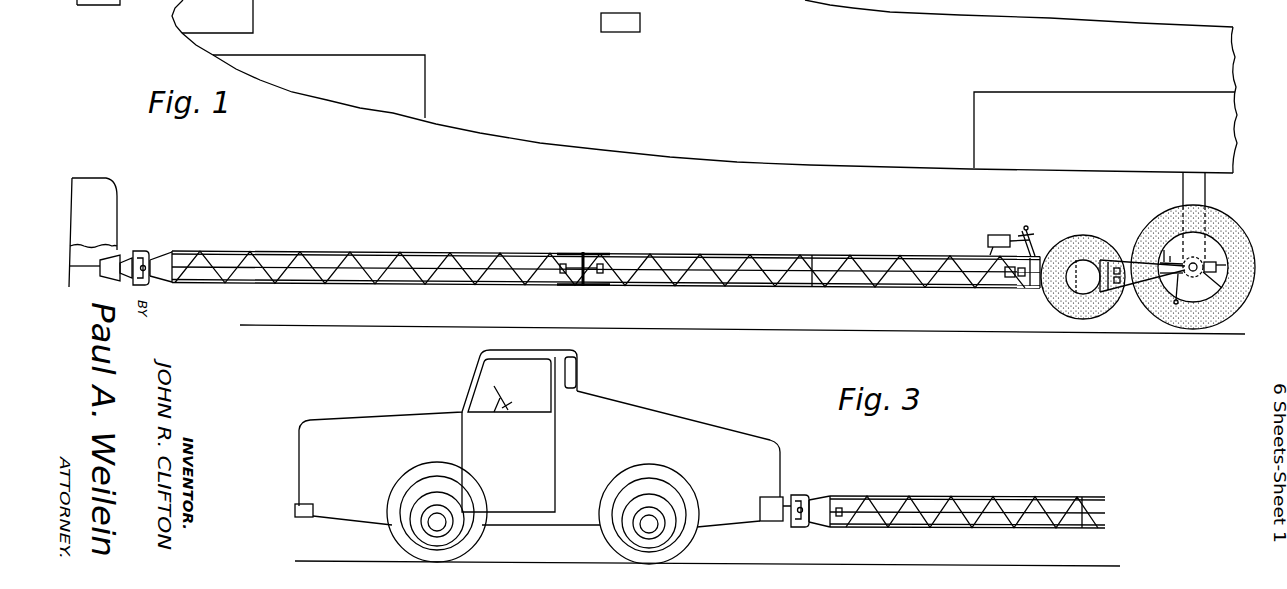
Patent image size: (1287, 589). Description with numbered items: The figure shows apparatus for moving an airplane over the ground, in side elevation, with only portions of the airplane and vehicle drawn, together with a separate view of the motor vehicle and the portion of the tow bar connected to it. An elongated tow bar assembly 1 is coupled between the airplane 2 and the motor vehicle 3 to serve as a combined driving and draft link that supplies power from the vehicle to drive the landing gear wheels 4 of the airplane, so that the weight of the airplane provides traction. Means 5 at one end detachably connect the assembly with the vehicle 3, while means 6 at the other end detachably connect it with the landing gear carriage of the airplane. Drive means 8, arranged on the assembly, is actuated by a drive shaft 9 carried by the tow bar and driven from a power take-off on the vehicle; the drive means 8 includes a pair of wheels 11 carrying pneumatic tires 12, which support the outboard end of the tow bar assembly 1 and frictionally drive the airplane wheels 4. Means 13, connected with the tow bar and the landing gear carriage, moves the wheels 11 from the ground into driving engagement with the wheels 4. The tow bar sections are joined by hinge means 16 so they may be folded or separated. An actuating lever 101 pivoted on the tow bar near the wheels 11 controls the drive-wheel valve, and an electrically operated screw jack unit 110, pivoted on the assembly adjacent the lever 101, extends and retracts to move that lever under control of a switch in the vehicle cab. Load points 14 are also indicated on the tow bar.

In FIG. 1, the tow bar assembly 1 is at (648, 253).
In FIG. 3, the tow bar assembly 1 is at (987, 495).
In FIG. 1, the airplane 2 is at (508, 122).
In FIG. 1, the motor vehicle 3 is at (110, 199).
In FIG. 3, the motor vehicle 3 is at (738, 448).
In FIG. 1, the landing gear wheels 4 is at (1145, 224).
In FIG. 1, the means for detachably connecting the assembly with the vehicle 5 is at (146, 243).
In FIG. 3, the means for detachably connecting the assembly with the vehicle 5 is at (820, 492).
In FIG. 1, the means for detachably connecting the assembly with the landing gear carriage 6 is at (1208, 266).
In FIG. 1, the drive means 8 is at (1074, 238).
In FIG. 1, the drive shaft 9 is at (673, 282).
In FIG. 3, the drive shaft 9 is at (1070, 501).
In FIG. 1, the wheels 11 is at (1082, 300).
In FIG. 1, the pneumatic tires 12 is at (1105, 299).
In FIG. 1, the means for moving the wheels 13 is at (1191, 269).
In FIG. 1, the load points 14 is at (785, 280).
In FIG. 1, the hinge means 16 is at (585, 254).
In FIG. 1, the actuating lever 101 is at (1028, 228).
In FIG. 1, the electrically operated screw jack unit 110 is at (999, 235).